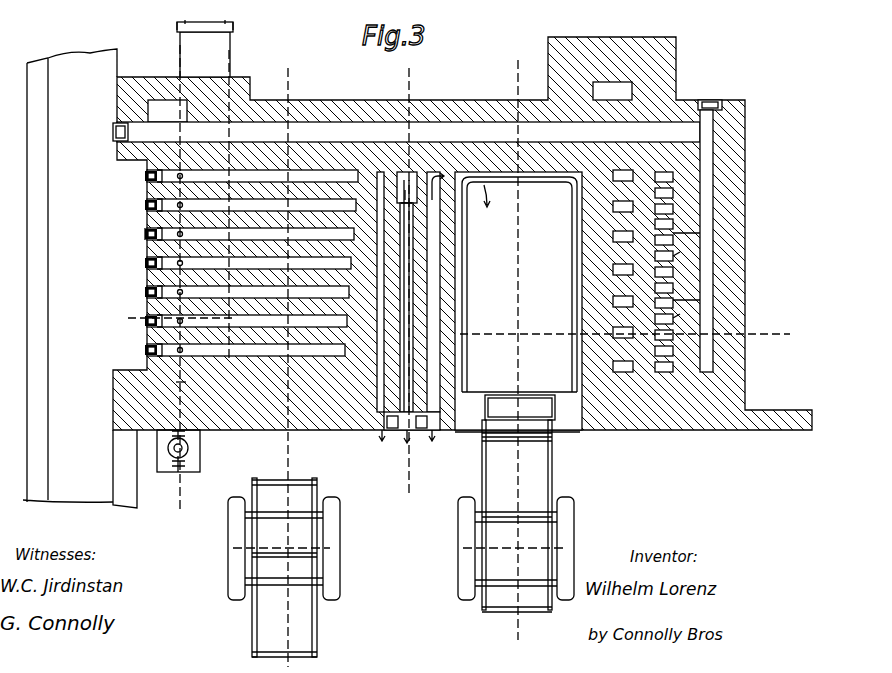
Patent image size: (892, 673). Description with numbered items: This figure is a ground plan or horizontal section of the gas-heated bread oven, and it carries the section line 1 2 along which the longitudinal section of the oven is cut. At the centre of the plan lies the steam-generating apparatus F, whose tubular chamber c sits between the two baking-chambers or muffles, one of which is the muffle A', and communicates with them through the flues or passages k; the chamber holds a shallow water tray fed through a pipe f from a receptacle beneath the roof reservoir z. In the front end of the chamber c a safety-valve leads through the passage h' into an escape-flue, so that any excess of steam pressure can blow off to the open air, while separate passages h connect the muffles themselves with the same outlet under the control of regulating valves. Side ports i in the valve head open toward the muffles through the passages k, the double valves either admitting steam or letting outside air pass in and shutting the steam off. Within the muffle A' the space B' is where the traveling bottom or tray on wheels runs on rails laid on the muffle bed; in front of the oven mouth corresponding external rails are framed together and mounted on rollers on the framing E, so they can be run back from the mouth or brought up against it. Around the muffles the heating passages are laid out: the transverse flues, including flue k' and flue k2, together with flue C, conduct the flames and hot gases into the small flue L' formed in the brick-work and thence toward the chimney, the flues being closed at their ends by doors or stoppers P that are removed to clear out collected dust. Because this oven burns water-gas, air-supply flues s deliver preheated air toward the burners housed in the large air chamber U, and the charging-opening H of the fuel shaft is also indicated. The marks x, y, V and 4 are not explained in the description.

The charging-opening H is at (200, 18).
The air flue or chamber U is at (205, 54).
The doors or stoppers P is at (720, 95).
The small flue L' is at (408, 133).
The flues or passages k is at (251, 264).
The fitting y is at (134, 236).
The section line 1 is at (161, 322).
The section line 2 is at (631, 333).
The flue k' is at (378, 292).
The tubular chamber c is at (407, 187).
The steam-generating apparatus F is at (405, 302).
The passages h is at (435, 292).
The passage h' is at (405, 272).
The cylinder B' is at (518, 301).
The baking-chamber or muffle A' is at (533, 407).
The pipe f is at (412, 438).
The side passages i is at (403, 441).
The flue k2 is at (626, 266).
The reservoir z is at (684, 241).
The air-supply flue s is at (681, 286).
The port 4 is at (689, 234).
The point x is at (178, 388).
The valve V is at (185, 451).
The framing E is at (401, 538).
The flue C is at (517, 441).